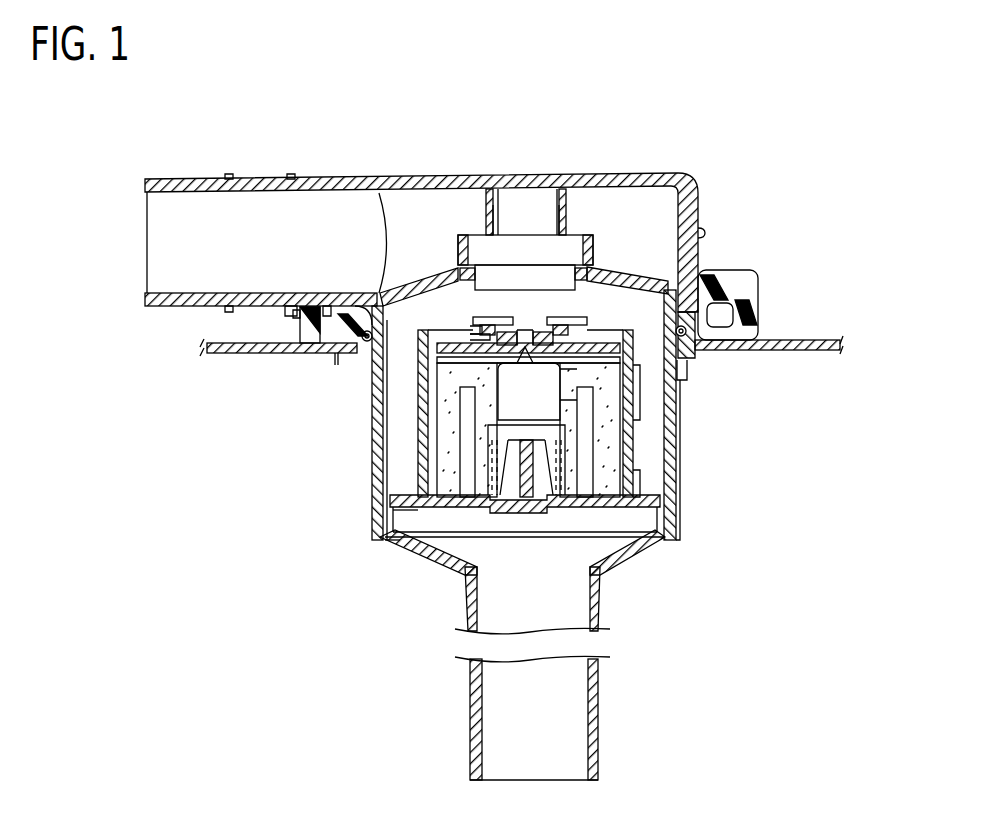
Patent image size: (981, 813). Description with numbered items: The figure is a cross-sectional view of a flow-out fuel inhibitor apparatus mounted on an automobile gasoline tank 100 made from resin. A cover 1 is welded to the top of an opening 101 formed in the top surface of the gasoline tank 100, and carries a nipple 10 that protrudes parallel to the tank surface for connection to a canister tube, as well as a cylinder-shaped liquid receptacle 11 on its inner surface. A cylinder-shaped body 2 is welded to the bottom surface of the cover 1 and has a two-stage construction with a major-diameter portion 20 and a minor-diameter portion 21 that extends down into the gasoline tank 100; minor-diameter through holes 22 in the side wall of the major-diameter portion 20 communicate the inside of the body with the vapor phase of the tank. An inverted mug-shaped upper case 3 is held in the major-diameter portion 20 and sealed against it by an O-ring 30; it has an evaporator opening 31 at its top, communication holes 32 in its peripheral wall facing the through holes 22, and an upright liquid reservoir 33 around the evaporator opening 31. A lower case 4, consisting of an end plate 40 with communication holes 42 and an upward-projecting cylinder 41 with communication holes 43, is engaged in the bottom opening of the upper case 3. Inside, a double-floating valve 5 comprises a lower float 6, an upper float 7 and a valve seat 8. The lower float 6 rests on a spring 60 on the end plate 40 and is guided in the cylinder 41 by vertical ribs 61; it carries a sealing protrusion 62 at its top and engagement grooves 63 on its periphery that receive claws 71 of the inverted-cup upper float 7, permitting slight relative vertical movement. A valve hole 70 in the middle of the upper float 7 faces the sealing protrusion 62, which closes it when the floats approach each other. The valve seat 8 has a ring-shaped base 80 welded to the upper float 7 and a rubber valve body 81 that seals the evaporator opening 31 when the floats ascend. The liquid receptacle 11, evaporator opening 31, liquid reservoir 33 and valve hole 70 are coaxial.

The cover 1 is at (660, 152).
The cylinder-shaped body 2 is at (600, 587).
The upper case 3 is at (705, 217).
The lower case 4 is at (428, 470).
The double-floating valve 5 is at (367, 502).
The lower float 6 is at (687, 492).
The upper float 7 is at (595, 368).
The valve seat 8 is at (455, 312).
The nipple 10 is at (186, 178).
The liquid receptacle 11 is at (565, 189).
The major-diameter portion 20 is at (687, 470).
The minor-diameter portion 21 is at (598, 702).
The minor-diameter through holes 22 is at (695, 357).
The O-ring 30 is at (353, 342).
The evaporator opening 31 is at (490, 240).
The communication holes 32 is at (688, 381).
The liquid reservoir 33 is at (595, 255).
The end plate 40 is at (405, 537).
The cylinder 41 is at (430, 393).
The communication holes 42 is at (437, 508).
The communication holes 43 is at (605, 480).
The spring 60 is at (587, 507).
The ribs 61 is at (630, 385).
The sealing protrusion 62 is at (550, 355).
The engagement grooves 63 is at (472, 497).
The valve hole 70 is at (520, 335).
The claws 71 is at (420, 453).
The base 80 is at (473, 333).
The valve body 81 is at (470, 322).
The gasoline tank 100 is at (790, 340).
The opening 101 is at (330, 349).